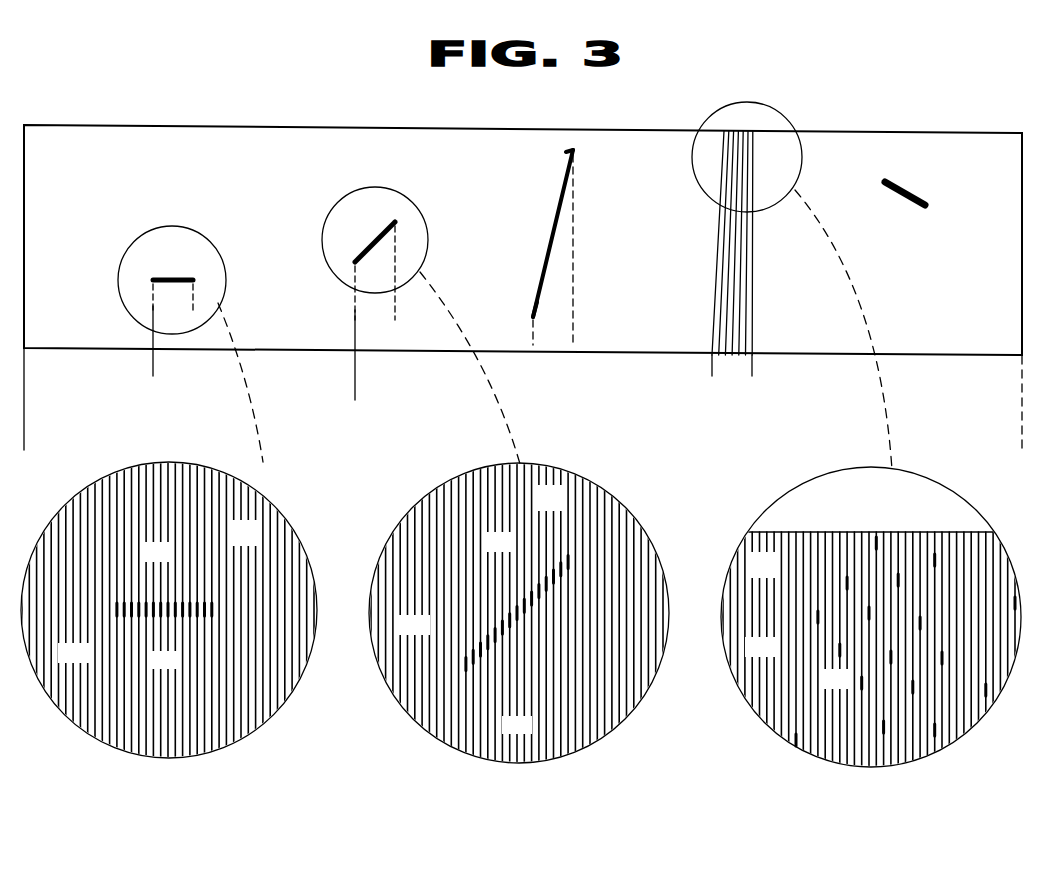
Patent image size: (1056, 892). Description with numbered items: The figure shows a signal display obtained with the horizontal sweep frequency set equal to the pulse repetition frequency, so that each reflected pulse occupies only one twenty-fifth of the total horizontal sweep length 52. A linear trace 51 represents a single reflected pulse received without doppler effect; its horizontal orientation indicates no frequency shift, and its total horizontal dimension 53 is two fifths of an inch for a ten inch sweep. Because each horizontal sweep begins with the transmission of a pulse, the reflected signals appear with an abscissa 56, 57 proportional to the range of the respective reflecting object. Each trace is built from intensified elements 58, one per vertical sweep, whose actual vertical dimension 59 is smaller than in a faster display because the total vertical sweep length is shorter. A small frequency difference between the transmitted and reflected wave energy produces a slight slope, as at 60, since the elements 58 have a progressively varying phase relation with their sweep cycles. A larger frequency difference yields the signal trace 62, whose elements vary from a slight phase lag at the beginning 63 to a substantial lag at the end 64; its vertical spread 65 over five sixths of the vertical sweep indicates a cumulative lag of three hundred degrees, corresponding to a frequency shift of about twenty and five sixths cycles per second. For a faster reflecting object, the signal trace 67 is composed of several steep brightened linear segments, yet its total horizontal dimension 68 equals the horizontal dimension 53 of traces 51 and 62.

The linear trace 51 is at (172, 277).
The total horizontal sweep length 52 is at (24, 430).
The total horizontal dimension 53 is at (153, 306).
The abscissa 56 is at (153, 367).
The abscissa 57 is at (24, 393).
The element 58 is at (120, 612).
The vertical dimension 59 is at (97, 586).
The sloped signal trace 60 is at (366, 244).
The signal trace 62 is at (548, 242).
The beginning of the signal trace 63 is at (532, 315).
The end of the trace 64 is at (570, 153).
The vertical spread 65 is at (592, 149).
The signal trace 67 is at (733, 298).
The total horizontal dimension 68 is at (752, 368).